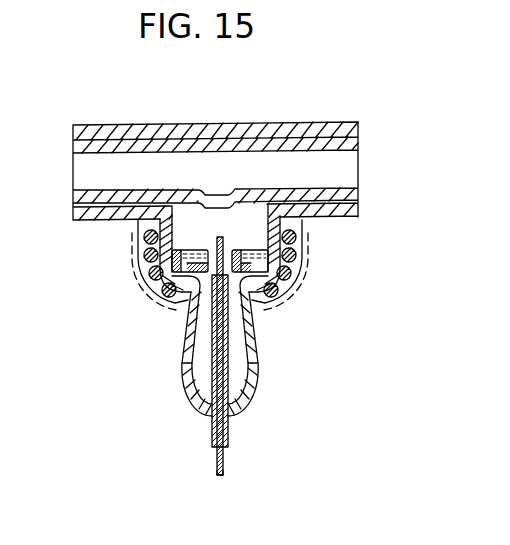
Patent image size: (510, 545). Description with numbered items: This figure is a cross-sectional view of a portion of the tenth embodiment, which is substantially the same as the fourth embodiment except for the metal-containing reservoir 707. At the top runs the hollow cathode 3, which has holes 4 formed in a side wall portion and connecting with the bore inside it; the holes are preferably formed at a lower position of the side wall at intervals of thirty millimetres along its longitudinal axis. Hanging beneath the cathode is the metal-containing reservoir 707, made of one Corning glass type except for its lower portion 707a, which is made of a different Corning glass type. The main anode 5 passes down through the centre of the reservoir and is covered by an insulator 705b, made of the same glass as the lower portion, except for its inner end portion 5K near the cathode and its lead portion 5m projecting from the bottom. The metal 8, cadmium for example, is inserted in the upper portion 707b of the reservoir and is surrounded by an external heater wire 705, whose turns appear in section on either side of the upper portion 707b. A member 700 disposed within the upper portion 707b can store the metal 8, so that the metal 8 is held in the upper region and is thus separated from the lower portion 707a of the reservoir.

The hollow cathode 3 is at (253, 148).
The holes 4 is at (218, 237).
The inner end portion 5K is at (206, 192).
The main anode 5 is at (226, 458).
The lead portion 5m is at (228, 474).
The metal 8 is at (262, 257).
The member 700 is at (161, 262).
The external heater wire 705 is at (145, 254).
The insulator 705b is at (230, 318).
The metal-containing reservoir 707 is at (158, 342).
The lower portion 707a is at (263, 390).
The upper portion 707b is at (145, 236).